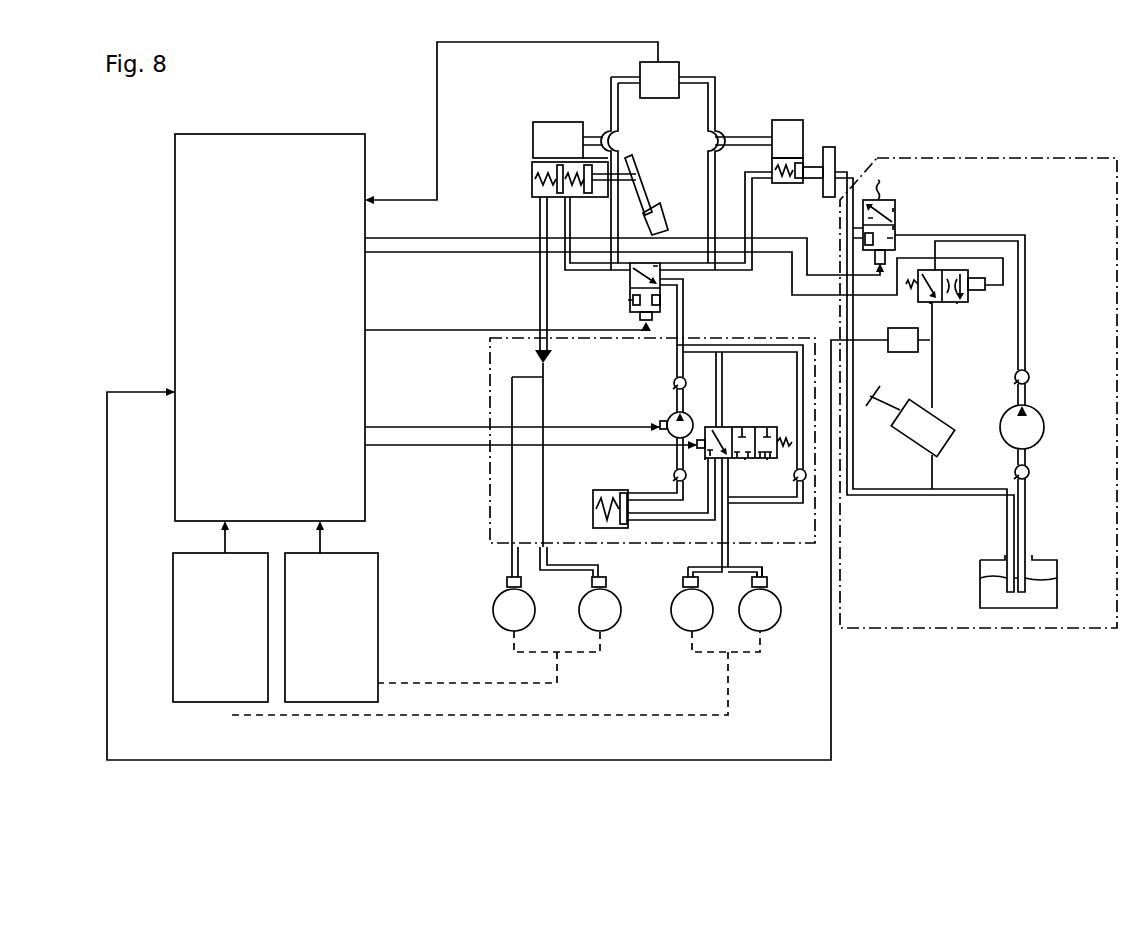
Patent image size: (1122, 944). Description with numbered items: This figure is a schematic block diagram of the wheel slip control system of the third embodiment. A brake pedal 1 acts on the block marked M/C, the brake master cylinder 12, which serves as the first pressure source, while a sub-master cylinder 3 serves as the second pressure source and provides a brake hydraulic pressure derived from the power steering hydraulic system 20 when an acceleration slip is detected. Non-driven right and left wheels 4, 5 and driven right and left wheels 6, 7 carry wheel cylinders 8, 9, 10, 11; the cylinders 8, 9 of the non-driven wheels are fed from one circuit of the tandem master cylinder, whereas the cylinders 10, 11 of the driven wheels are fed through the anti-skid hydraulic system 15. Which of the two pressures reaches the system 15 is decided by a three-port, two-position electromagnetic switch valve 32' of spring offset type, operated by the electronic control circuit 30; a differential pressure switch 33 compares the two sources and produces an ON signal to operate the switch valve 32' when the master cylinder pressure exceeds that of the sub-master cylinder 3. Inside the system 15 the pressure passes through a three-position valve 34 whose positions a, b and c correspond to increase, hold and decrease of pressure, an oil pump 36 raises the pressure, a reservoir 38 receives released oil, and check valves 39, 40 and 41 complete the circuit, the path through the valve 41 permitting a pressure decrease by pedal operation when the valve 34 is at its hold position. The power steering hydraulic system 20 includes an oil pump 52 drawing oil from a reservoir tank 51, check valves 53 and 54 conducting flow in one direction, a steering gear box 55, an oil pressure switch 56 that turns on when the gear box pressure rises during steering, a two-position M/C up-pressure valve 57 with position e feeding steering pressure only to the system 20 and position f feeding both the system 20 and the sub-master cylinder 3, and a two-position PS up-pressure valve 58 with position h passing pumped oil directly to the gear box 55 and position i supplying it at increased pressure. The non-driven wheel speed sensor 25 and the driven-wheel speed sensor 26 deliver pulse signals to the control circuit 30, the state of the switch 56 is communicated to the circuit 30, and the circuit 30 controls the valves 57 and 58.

The brake pedal 1 is at (650, 196).
The sub-master cylinder 3 is at (803, 122).
The non-driven right wheel 4 is at (494, 609).
The non-driven left wheel 5 is at (580, 608).
The driven right wheel 6 is at (672, 611).
The driven left wheel 7 is at (781, 608).
The wheel cylinder 8 is at (510, 576).
The wheel cylinder 9 is at (605, 578).
The wheel cylinder 10 is at (684, 578).
The wheel cylinder 11 is at (768, 578).
The master cylinder 12 is at (562, 122).
The anti-skid hydraulic system 15 is at (512, 338).
The power steering hydraulic system 20 is at (1045, 158).
The non-driven wheel speed sensor 25 is at (378, 569).
The driven-wheel speed sensor 26 is at (173, 571).
The electronic control circuit 30 is at (299, 134).
The switch valve 32' is at (614, 291).
The differential pressure switch 33 is at (679, 66).
The 3-position valve 34 is at (758, 427).
The oil pump 36 is at (669, 415).
The reservoir 38 is at (595, 490).
The check valve 39 is at (674, 381).
The check valve 40 is at (674, 474).
The check valve 41 is at (804, 481).
The reservoir tank 51 is at (980, 590).
The oil pump 52 is at (1044, 424).
The check valve 53 is at (1029, 373).
The check valve 54 is at (1030, 470).
The steering gear box 55 is at (948, 420).
The oil pressure switch 56 is at (890, 329).
The M/C up-pressure valve 57 is at (896, 206).
The PS up-pressure valve 58 is at (953, 302).
The increase pressure position a is at (706, 460).
The hold pressure position b is at (745, 459).
The decrease pressure position c is at (767, 459).
The position e of M/C up-pressure valve e is at (896, 228).
The position f of M/C up-pressure valve f is at (896, 212).
The position h of PS up-pressure valve h is at (930, 303).
The position i of PS up-pressure valve i is at (960, 303).